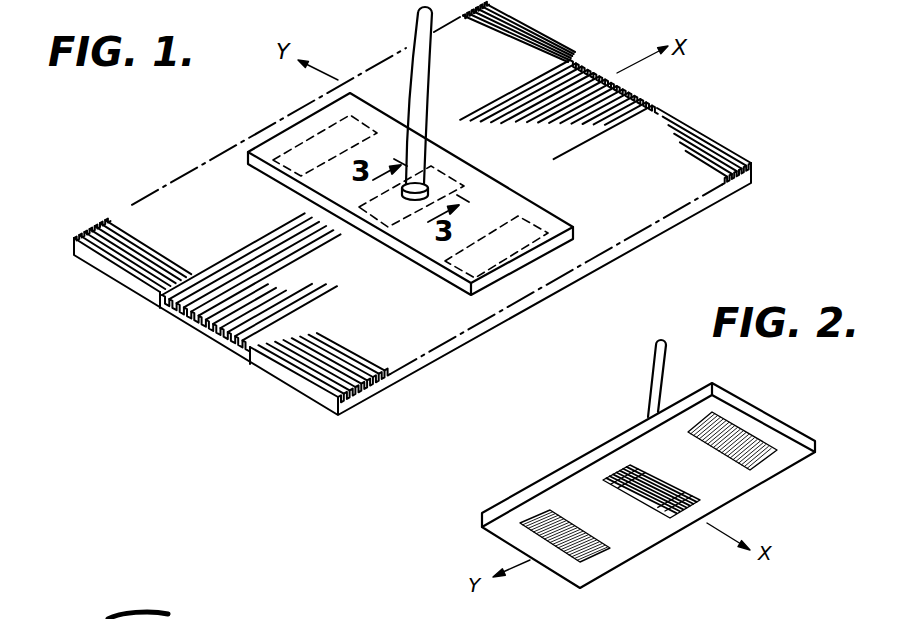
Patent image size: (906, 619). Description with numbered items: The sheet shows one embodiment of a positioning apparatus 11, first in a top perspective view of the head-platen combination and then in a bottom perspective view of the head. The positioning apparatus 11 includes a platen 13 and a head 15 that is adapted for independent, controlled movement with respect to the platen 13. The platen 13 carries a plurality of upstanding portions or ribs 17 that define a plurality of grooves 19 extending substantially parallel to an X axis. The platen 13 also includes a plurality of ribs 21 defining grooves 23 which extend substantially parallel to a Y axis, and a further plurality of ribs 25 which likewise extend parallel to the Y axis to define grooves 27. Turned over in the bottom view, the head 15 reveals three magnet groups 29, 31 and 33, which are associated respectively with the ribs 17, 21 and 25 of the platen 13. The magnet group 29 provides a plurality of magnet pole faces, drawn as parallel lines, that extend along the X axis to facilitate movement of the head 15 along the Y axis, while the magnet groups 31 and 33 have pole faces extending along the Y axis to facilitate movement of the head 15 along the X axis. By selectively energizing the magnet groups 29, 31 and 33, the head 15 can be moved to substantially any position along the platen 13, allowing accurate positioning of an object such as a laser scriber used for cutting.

In FIG. 1, the positioning apparatus 11 is at (222, 121).
In FIG. 1, the platen 13 is at (566, 32).
In FIG. 1, the head 15 is at (489, 167).
In FIG. 2, the head 15 is at (771, 395).
In FIG. 1, the ribs 17 is at (200, 311).
In FIG. 1, the grooves 19 is at (224, 337).
In FIG. 1, the ribs 21 is at (97, 236).
In FIG. 1, the grooves 23 is at (97, 223).
In FIG. 1, the ribs 25 is at (310, 386).
In FIG. 1, the grooves 27 is at (385, 388).
In FIG. 1, the magnet group 29 is at (380, 220).
In FIG. 2, the magnet group 29 is at (617, 473).
In FIG. 1, the magnet group 31 is at (298, 143).
In FIG. 2, the magnet group 31 is at (592, 550).
In FIG. 1, the magnet group 33 is at (507, 262).
In FIG. 2, the magnet group 33 is at (753, 460).